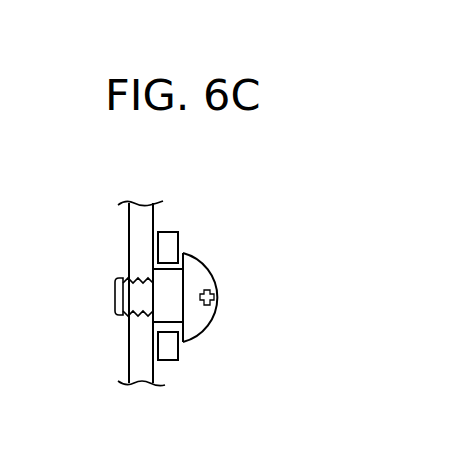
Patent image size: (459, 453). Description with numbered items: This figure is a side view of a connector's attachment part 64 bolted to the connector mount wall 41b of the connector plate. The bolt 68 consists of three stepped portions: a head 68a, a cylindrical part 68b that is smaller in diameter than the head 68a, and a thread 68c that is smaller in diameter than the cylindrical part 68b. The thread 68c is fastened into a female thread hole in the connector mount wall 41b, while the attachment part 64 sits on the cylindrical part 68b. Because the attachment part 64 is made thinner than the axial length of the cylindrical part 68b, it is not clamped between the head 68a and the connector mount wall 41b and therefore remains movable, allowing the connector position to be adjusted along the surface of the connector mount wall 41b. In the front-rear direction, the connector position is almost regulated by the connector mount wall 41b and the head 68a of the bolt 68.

The connector mount wall 41b is at (128, 228).
The attachment part 64 is at (171, 232).
The bolt 68 is at (234, 294).
The head 68a is at (210, 325).
The cylindrical part 68b is at (173, 290).
The thread 68c is at (114, 283).